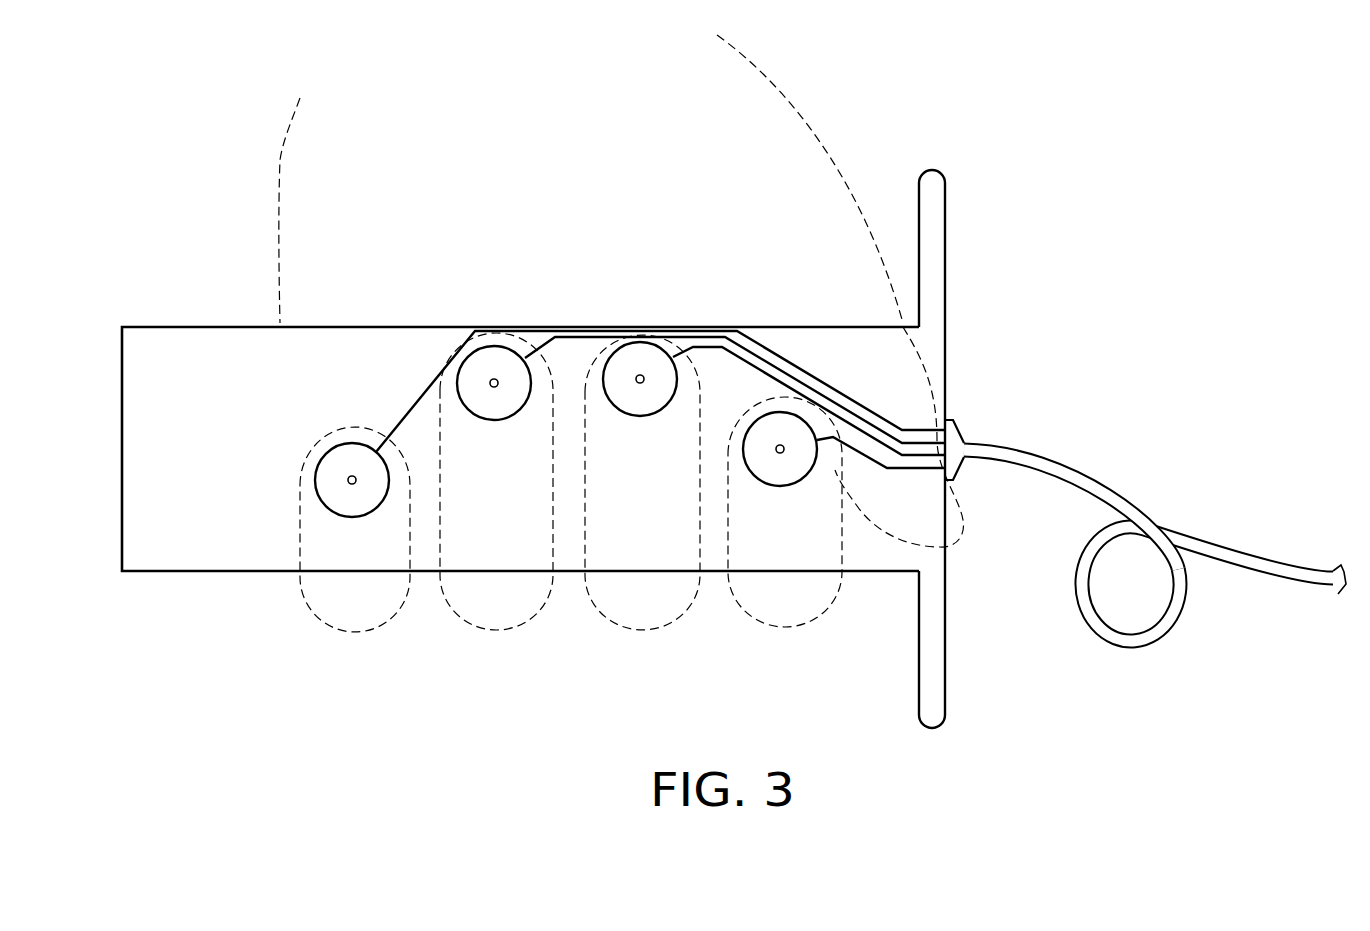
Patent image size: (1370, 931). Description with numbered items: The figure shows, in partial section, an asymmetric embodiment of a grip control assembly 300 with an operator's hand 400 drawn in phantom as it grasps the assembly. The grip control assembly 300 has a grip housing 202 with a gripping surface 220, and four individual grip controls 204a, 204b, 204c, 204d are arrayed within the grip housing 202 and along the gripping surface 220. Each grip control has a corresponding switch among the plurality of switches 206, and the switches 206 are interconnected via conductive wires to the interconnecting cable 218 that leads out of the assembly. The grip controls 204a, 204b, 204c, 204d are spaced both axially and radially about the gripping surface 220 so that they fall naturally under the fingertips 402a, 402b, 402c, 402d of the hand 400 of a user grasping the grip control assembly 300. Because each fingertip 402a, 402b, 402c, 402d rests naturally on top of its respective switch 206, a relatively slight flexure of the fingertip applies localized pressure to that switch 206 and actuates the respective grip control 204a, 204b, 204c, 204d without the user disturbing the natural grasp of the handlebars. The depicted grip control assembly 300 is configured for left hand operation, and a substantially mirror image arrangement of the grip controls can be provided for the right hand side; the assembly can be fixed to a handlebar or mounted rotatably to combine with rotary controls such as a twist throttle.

The grip control assembly 300 is at (256, 178).
The grip housing 202 is at (232, 326).
The grip control 204a is at (352, 527).
The grip control 204b is at (494, 432).
The grip control 204c is at (640, 427).
The grip control 204d is at (780, 497).
The switches 206 is at (514, 341).
The interconnecting cable 218 is at (1143, 498).
The gripping surface 220 is at (197, 541).
The hand 400 is at (785, 74).
The fingertip 402a is at (318, 440).
The fingertip 402b is at (437, 409).
The fingertip 402c is at (711, 336).
The fingertip 402d is at (817, 443).